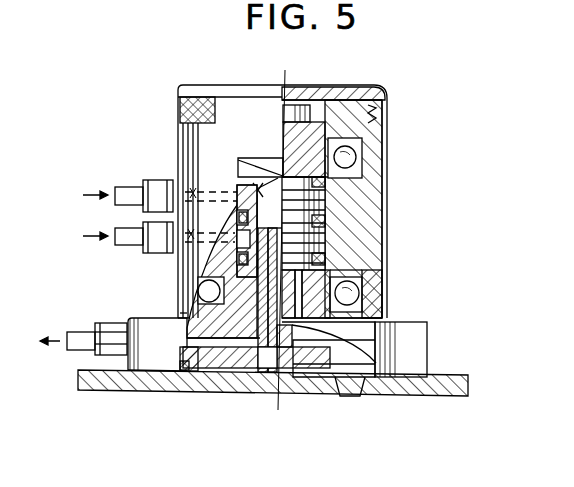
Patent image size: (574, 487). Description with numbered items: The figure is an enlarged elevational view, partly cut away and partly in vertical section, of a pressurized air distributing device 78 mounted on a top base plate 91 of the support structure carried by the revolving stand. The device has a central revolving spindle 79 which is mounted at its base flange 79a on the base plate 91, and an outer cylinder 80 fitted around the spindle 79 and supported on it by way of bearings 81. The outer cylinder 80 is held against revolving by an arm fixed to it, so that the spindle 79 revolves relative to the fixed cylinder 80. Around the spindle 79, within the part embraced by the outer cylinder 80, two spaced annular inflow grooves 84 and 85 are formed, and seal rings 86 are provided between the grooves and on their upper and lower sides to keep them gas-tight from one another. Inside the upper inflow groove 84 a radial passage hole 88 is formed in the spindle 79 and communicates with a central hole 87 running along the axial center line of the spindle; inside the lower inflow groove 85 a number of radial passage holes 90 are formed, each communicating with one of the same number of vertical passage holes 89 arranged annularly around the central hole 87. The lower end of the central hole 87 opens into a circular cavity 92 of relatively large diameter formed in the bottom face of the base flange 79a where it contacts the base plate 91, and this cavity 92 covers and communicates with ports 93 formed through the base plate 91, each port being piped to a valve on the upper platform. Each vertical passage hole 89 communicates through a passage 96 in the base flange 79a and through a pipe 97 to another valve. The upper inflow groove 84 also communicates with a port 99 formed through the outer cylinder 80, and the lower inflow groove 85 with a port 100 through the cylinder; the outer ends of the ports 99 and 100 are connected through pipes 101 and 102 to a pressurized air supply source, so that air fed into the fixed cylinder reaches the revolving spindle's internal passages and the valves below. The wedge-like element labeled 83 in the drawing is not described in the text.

The pressurized air distributing device 78 is at (395, 125).
The central revolving spindle 79 is at (198, 291).
The base flange 79a is at (153, 368).
The outer cylinder 80 is at (375, 150).
The bearings 81 is at (357, 170).
The wedge 83 is at (264, 168).
The annular inflow groove 84 is at (322, 228).
The annular inflow groove 85 is at (322, 270).
The seal rings 86 is at (326, 205).
The central hole 87 is at (240, 207).
The passage hole 88 is at (258, 196).
The vertical passage holes 89 is at (187, 332).
The passage holes 90 is at (205, 262).
The top base plate 91 is at (447, 378).
The circular cavity 92 is at (237, 372).
The ports 93 is at (348, 392).
The passage 96 is at (213, 350).
The pipe 97 is at (83, 335).
The port 99 is at (190, 185).
The port 100 is at (195, 220).
The pipe 101 is at (127, 190).
The pipe 102 is at (130, 240).